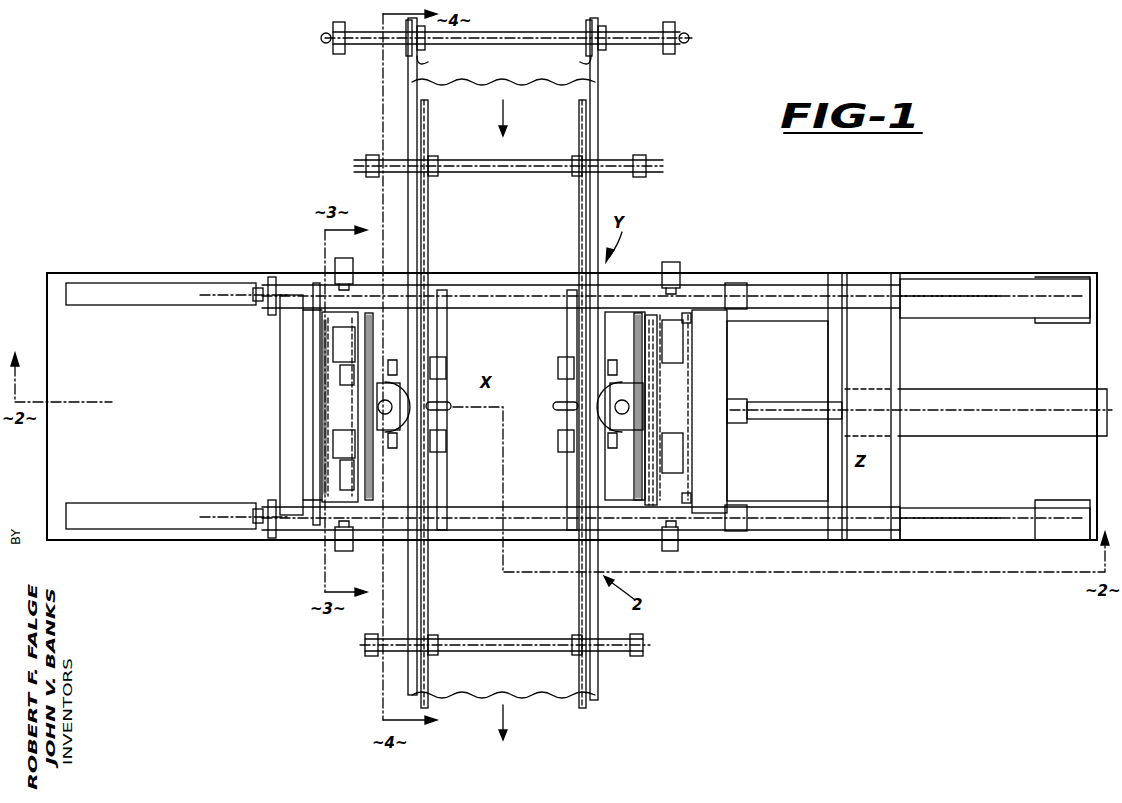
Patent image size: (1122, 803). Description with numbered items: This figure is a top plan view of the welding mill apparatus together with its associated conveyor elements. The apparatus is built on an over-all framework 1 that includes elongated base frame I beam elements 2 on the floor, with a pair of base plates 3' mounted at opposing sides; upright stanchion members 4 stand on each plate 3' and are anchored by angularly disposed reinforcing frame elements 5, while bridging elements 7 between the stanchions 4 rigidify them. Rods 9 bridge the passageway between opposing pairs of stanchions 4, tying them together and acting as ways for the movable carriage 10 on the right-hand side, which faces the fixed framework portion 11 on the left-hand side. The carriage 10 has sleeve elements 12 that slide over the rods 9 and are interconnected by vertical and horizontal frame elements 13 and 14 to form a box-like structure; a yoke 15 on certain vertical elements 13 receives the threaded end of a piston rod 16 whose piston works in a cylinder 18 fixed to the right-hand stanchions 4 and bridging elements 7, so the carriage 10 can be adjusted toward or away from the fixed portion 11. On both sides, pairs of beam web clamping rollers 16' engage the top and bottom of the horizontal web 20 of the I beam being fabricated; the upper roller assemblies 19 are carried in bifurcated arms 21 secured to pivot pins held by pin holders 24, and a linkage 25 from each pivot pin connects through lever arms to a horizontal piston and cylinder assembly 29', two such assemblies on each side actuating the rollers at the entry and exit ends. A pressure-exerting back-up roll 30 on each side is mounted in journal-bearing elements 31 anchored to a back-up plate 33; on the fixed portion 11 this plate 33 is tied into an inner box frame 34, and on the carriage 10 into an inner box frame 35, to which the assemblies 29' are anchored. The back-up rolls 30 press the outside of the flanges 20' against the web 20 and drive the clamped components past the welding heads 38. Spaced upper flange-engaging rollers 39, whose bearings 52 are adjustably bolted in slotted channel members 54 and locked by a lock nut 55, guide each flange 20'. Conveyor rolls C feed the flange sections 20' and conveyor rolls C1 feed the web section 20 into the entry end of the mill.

The framework 1 is at (746, 250).
The base frame I beam elements 2 is at (786, 282).
The base plates 3' is at (572, 406).
The stanchion members 4 is at (312, 280).
The reinforcing frame elements 5 is at (144, 284).
The bridging elements 7 is at (322, 342).
The rods 9 is at (508, 290).
The movable carriage 10 is at (714, 290).
The fixed framework portion 11 is at (280, 280).
The sleeve elements 12 is at (628, 290).
The vertically disposed frame elements 13 is at (730, 385).
The horizontally disposed frame elements 14 is at (735, 350).
The yoke 15 is at (744, 420).
The piston rod 16 is at (921, 406).
The beam web clamping rollers 16' is at (502, 409).
The cylinder 18 is at (1032, 394).
The upper roller assemblies 19 is at (452, 362).
The web 20 is at (500, 613).
The flanges 20' is at (525, 363).
The bifurcated arms 21 is at (448, 310).
The pin holders 24 is at (318, 522).
The linkage 25 is at (344, 275).
The piston and cylinder assembly 29' is at (511, 407).
The back-up roll 30 is at (370, 445).
The journal-bearing elements 31 is at (378, 407).
The back-up plate 33 is at (345, 520).
The inner box frame 34 is at (318, 403).
The inner box frame 35 is at (696, 412).
The welding heads 38 is at (451, 404).
The upper flange-engaging rollers 39 is at (428, 335).
The bearings 52 is at (440, 452).
The channel members 54 is at (404, 372).
The lock nut 55 is at (352, 455).
The conveyor rolls C is at (506, 46).
The conveyor rolls C1 is at (432, 152).